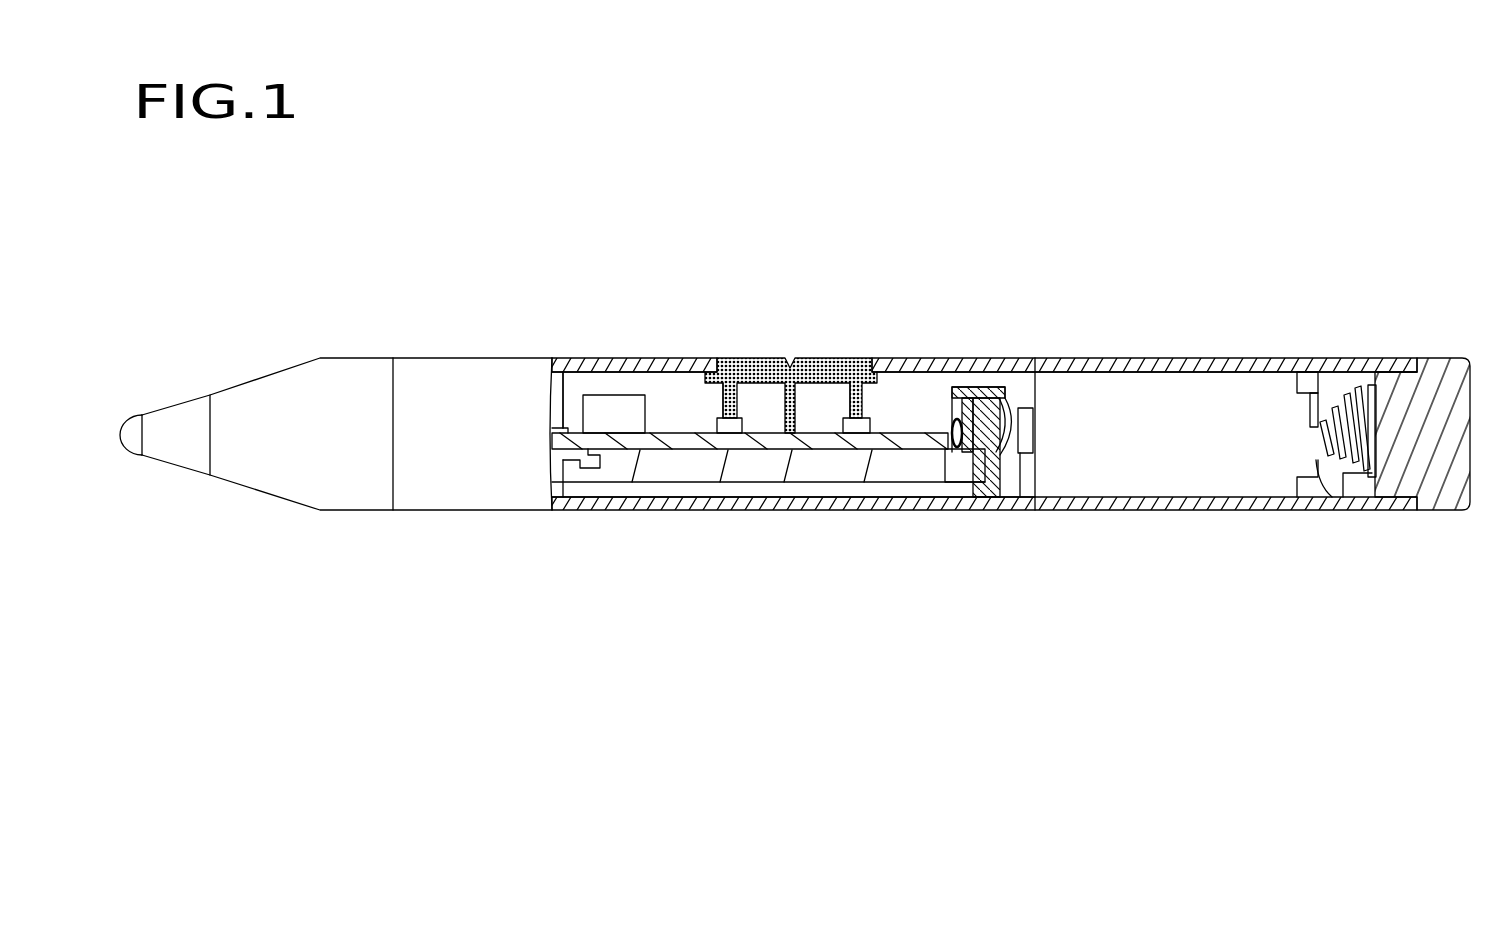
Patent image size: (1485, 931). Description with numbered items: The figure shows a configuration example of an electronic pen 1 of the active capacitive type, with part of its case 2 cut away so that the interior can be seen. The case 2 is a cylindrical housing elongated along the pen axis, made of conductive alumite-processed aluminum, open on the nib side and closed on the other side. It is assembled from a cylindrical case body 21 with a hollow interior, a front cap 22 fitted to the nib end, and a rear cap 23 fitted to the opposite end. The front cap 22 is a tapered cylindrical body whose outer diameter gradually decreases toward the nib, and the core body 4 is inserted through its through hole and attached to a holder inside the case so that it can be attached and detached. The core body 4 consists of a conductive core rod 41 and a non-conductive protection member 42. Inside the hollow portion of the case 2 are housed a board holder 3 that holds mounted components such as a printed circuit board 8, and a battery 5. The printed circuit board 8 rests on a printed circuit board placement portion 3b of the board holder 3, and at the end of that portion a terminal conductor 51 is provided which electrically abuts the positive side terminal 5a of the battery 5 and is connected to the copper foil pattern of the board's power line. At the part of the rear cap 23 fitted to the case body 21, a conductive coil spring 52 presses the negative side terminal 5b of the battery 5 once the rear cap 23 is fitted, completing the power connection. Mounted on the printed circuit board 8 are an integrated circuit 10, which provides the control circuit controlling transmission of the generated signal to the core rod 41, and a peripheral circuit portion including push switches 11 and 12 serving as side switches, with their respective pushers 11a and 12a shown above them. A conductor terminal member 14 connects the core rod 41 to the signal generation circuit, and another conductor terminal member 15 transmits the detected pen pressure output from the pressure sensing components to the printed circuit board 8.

The electronic pen 1 is at (645, 176).
The case 2 is at (1012, 448).
The case body 21 is at (1117, 358).
The front cap 22 is at (290, 387).
The rear cap 23 is at (1433, 482).
The board holder 3 is at (857, 459).
The printed circuit board placement portion 3b is at (808, 463).
The core body 4 is at (142, 525).
The core rod 41 is at (132, 445).
The protection member 42 is at (173, 457).
The battery 5 is at (1164, 440).
The positive side terminal 5a is at (1021, 455).
The negative side terminal 5b is at (1333, 487).
The terminal conductor 51 is at (982, 387).
The coil spring 52 is at (1328, 412).
The printed circuit board 8 is at (813, 363).
The integrated circuit 10 is at (619, 410).
The push switch 11 is at (725, 438).
The first switch pusher 11a is at (747, 365).
The push switch 12 is at (872, 440).
The second switch pusher 12a is at (838, 365).
The conductor terminal member 14 is at (578, 452).
The conductor terminal member 15 is at (565, 360).